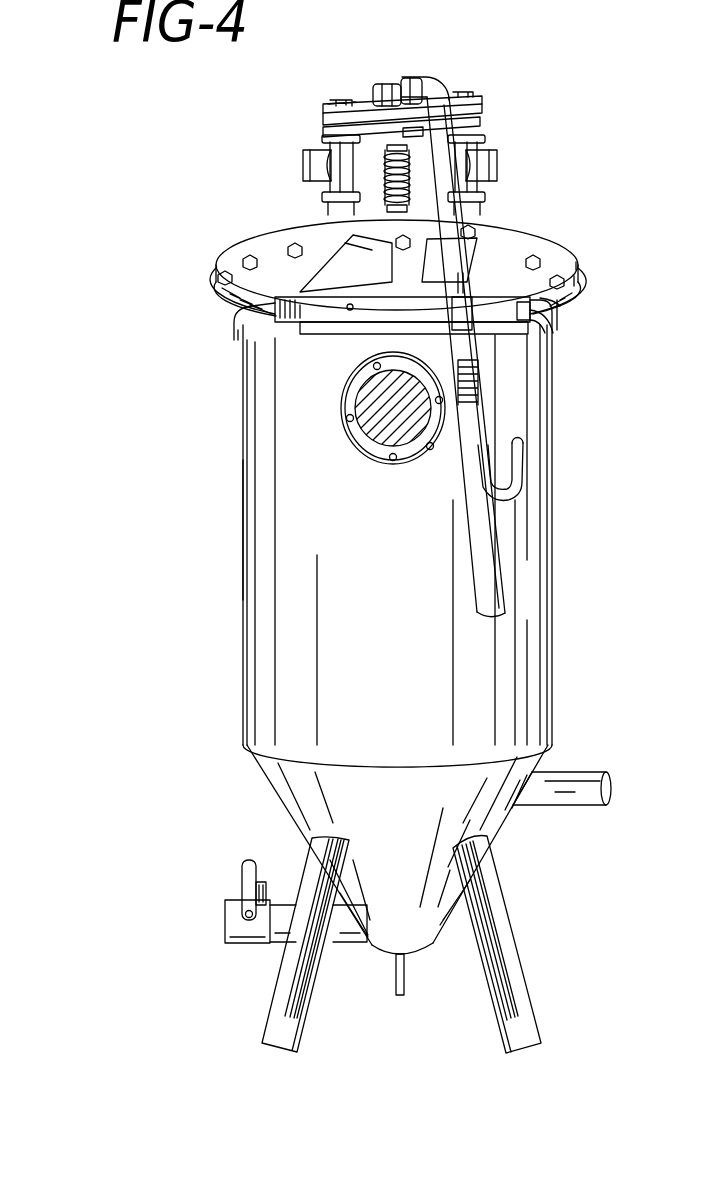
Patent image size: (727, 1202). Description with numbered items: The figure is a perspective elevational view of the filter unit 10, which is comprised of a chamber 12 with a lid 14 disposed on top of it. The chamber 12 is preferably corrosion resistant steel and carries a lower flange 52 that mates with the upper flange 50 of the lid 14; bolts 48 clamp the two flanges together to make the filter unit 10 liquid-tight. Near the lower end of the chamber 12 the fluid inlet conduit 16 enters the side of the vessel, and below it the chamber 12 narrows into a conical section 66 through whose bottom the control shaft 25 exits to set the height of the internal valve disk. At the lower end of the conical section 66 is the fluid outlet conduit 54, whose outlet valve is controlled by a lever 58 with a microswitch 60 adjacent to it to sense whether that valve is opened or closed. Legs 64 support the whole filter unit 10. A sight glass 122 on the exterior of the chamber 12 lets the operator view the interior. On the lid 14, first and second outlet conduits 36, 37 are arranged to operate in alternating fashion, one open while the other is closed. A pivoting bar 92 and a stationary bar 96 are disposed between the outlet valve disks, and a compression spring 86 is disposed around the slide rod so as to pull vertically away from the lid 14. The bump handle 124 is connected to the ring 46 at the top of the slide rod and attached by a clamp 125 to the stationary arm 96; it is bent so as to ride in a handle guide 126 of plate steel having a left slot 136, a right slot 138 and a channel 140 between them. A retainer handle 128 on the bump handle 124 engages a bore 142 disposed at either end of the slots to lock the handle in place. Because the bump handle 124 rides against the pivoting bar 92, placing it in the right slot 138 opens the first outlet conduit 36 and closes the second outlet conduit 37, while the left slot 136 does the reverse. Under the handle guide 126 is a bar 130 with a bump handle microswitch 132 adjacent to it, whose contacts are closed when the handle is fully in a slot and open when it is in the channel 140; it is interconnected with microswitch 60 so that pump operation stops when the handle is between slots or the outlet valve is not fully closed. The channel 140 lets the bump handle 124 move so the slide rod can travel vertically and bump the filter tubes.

The filter unit 10 is at (152, 626).
The chamber 12 is at (555, 672).
The lid 14 is at (482, 222).
The fluid inlet conduit 16 is at (592, 773).
The control shaft 25 is at (403, 960).
The first outlet conduit 36 is at (505, 165).
The second outlet conduit 37 is at (298, 165).
The ring 46 is at (395, 82).
The bolts 48 is at (597, 276).
The upper flange 50 is at (602, 247).
The lower flange 52 is at (553, 300).
The fluid outlet conduit 54 is at (225, 921).
The lever 58 is at (242, 874).
The microswitch 60 is at (268, 880).
The legs 64 is at (498, 1022).
The conical section 66 is at (510, 817).
The compression spring 86 is at (380, 182).
The pivoting bar 92 is at (482, 104).
The stationary bar 96 is at (482, 128).
The sight glass 122 is at (347, 433).
The bump handle 124 is at (487, 535).
The clamp 125 is at (418, 77).
The handle guide 126 is at (384, 265).
The retainer handle 128 is at (522, 452).
The bar 130 is at (545, 320).
The bump handle microswitch 132 is at (352, 370).
The left slot 136 is at (318, 328).
The right slot 138 is at (515, 320).
The channel 140 is at (357, 303).
The bolts 142 is at (478, 275).